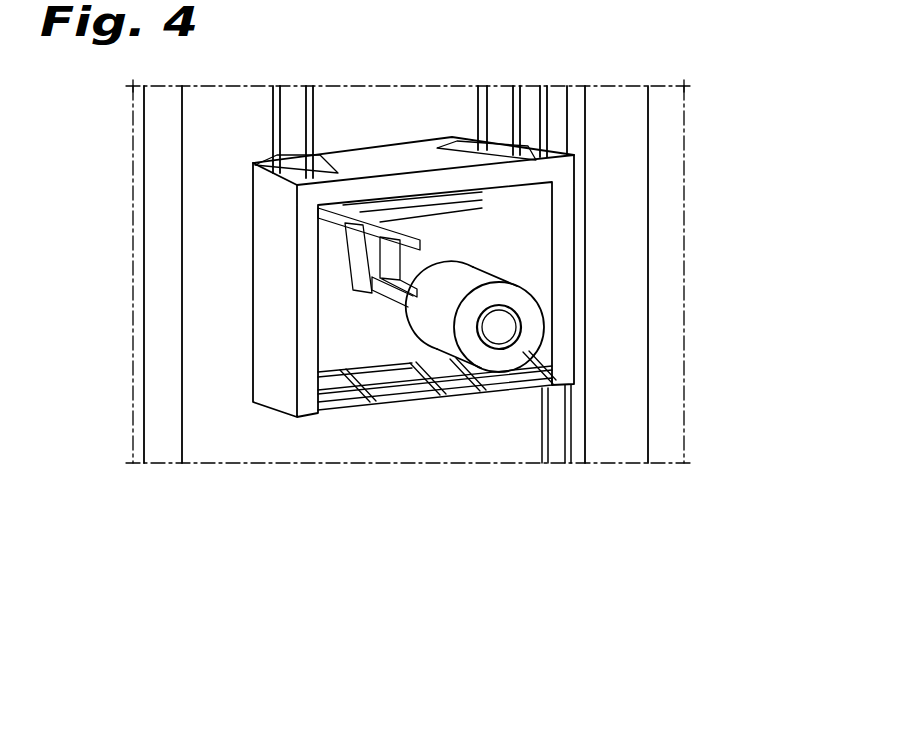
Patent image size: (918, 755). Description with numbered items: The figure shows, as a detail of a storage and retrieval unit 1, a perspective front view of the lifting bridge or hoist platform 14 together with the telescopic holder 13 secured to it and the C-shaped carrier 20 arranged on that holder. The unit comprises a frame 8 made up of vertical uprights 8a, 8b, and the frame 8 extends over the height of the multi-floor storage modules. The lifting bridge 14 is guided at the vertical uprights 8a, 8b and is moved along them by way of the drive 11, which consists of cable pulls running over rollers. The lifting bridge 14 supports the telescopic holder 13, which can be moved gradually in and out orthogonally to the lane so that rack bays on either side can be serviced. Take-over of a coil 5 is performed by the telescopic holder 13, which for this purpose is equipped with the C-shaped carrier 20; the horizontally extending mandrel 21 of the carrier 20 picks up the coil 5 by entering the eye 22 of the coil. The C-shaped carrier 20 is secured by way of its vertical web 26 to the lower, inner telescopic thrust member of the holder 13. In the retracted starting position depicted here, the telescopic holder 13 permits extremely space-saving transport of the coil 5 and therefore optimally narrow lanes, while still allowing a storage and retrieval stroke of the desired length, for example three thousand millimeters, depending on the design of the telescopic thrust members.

The apparatus 1 is at (708, 408).
The coil 5 is at (578, 386).
The frame 8 is at (406, 271).
The vertical upright 8a is at (197, 213).
The vertical upright 8b is at (620, 224).
The drive 11 is at (517, 130).
The telescopic holder 13 is at (352, 220).
The lifting bridge 14 is at (562, 187).
The C-shaped carrier 20 is at (356, 310).
The mandrel 21 is at (393, 298).
The eye 22 is at (522, 325).
The vertical web 26 is at (370, 263).